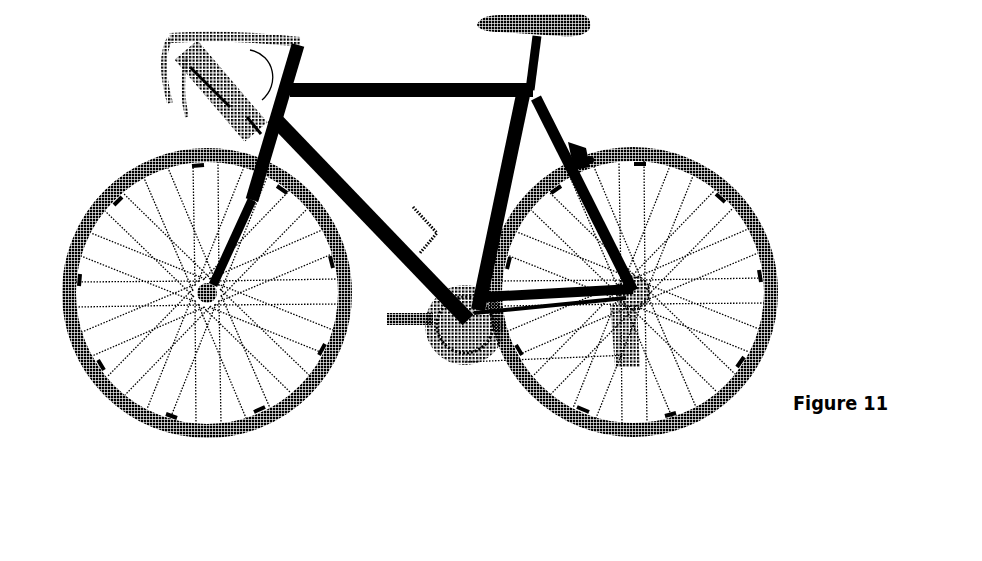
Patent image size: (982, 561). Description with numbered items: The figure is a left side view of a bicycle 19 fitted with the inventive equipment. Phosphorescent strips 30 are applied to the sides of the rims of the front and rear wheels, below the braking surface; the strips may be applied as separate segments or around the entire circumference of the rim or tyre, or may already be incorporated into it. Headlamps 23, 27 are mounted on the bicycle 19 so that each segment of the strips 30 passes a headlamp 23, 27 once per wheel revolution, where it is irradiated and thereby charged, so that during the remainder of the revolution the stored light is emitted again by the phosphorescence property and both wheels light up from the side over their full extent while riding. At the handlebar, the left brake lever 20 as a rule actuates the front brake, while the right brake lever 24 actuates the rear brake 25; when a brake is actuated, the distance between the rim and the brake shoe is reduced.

The bicycle 19 is at (410, 83).
The left brake lever 20 is at (170, 56).
The headlamp 23 is at (245, 160).
The right brake lever 24 is at (183, 113).
The rear brake 25 is at (577, 150).
The headlamp 27 is at (590, 160).
The phosphorescent strips 30 is at (577, 420).